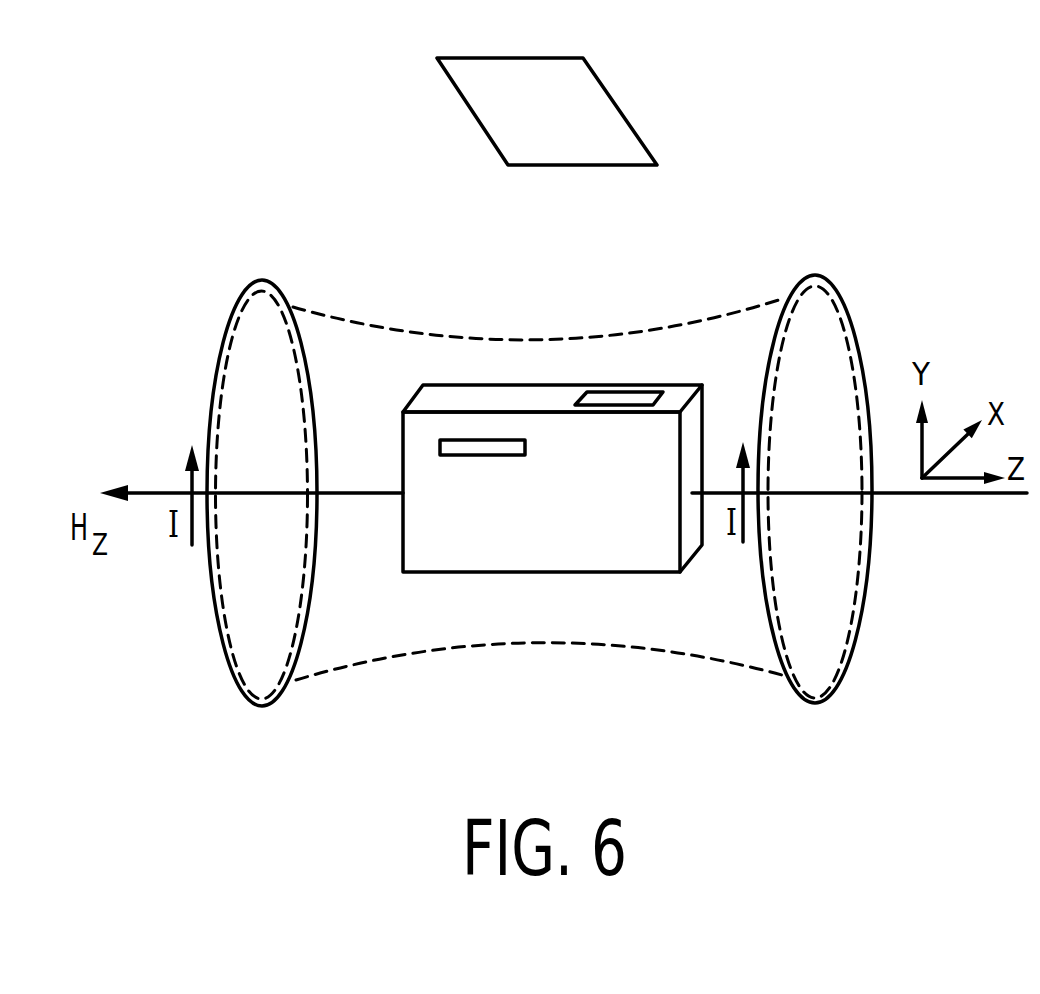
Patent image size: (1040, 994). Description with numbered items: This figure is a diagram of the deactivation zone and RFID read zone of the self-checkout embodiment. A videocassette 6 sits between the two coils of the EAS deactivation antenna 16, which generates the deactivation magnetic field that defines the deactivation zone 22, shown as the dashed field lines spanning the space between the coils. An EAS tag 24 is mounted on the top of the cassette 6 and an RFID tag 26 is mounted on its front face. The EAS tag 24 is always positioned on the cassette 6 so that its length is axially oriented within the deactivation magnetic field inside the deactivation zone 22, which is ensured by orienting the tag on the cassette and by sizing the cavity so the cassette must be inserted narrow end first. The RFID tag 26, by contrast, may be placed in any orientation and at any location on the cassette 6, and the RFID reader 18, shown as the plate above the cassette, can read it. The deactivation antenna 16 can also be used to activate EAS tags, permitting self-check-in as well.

The videocassette 6 is at (620, 493).
The EAS deactivation antenna 16 is at (265, 708).
The RFID reader 18 is at (608, 90).
The deactivation zone 22 is at (677, 325).
The EAS tag 24 is at (620, 398).
The RFID tag 26 is at (475, 448).